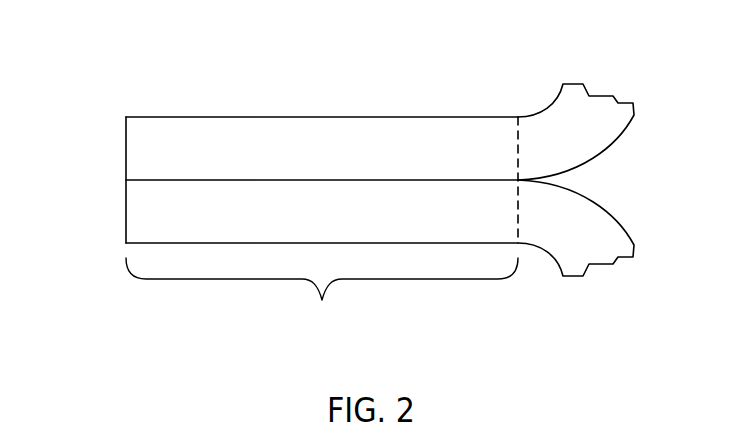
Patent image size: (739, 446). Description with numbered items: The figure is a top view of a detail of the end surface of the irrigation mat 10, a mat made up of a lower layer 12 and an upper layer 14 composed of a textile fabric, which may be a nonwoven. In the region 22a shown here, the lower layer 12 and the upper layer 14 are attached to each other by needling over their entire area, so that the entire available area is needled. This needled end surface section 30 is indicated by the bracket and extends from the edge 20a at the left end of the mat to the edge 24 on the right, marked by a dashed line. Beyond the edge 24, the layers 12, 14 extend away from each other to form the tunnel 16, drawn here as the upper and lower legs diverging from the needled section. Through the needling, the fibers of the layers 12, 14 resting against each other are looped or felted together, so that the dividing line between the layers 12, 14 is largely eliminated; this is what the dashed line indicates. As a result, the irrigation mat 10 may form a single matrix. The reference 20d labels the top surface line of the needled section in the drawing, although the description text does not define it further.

The irrigation mat 10 is at (162, 88).
The lower layer 12 is at (608, 245).
The upper layer 14 is at (608, 115).
The tunnel 16 is at (609, 191).
The edge 20a is at (126, 198).
The top surface of spring body 20d is at (323, 117).
The region 22a is at (202, 115).
The edge 24 is at (518, 117).
The needled end surface section 30 is at (322, 296).